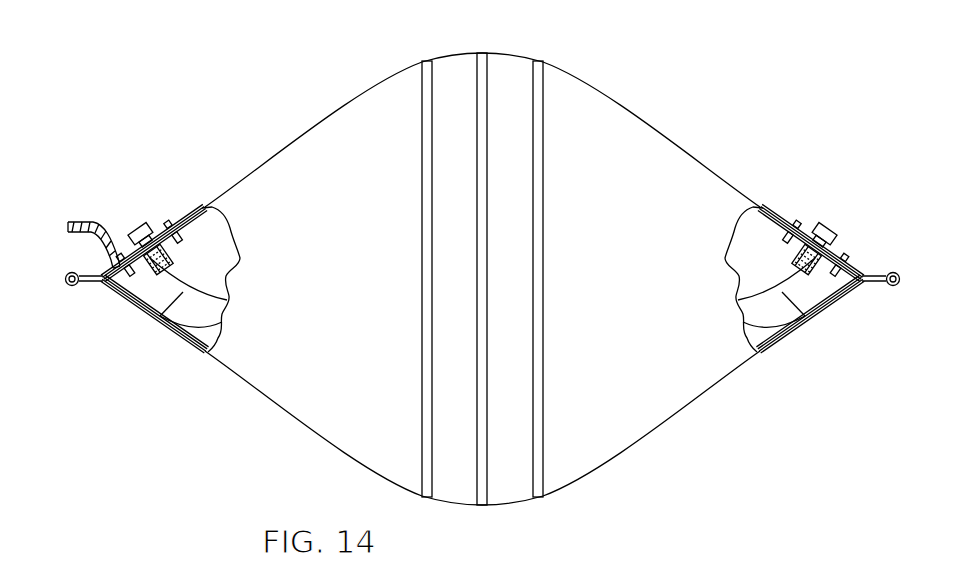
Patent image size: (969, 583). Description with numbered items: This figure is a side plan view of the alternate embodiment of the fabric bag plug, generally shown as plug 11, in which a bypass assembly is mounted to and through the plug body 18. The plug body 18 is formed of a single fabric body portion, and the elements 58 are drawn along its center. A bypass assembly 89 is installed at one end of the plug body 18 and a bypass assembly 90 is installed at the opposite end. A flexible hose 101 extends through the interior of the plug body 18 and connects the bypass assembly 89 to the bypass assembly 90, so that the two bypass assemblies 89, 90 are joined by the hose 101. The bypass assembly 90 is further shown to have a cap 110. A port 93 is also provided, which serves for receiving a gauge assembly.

The plug 11 is at (684, 142).
The plug body 18 is at (273, 352).
The support rods 58 is at (420, 81).
The bypass assembly 89 is at (825, 225).
The bypass assembly 90 is at (157, 218).
The port 93 is at (107, 255).
The flexible hose 101 is at (157, 317).
The cap 110 is at (130, 216).